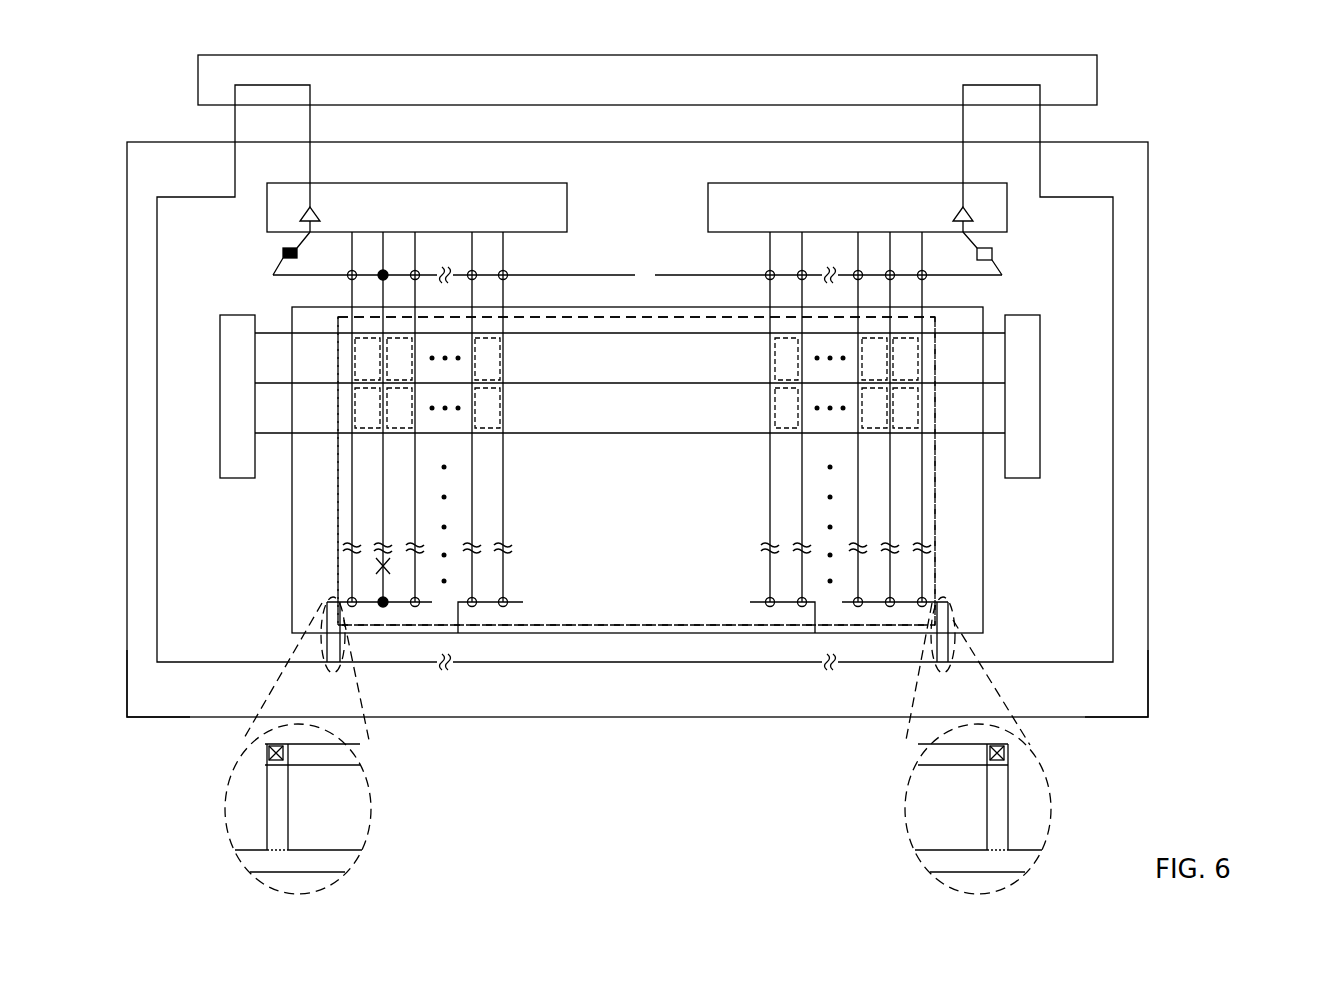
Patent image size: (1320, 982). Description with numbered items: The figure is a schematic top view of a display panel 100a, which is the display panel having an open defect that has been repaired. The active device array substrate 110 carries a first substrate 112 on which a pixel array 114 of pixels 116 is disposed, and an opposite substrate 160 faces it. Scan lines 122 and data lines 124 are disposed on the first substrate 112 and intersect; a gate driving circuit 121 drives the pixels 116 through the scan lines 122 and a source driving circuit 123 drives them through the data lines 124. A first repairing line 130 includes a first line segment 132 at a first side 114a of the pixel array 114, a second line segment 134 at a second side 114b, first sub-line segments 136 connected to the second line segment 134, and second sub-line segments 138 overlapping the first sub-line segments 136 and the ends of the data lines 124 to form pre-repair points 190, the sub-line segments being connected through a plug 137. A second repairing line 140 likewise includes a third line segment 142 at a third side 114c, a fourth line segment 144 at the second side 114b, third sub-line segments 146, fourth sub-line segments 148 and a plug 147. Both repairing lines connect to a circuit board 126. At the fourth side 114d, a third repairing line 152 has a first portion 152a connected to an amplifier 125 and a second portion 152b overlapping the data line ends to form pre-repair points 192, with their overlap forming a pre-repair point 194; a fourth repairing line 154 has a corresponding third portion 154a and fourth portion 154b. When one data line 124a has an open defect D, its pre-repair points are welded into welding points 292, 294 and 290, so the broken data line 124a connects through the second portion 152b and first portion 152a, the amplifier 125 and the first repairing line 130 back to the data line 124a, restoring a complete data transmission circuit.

The display panel 100a is at (679, 436).
The active device array substrate 110 is at (1148, 645).
The first substrate 112 is at (636, 714).
The pixel array 114 is at (636, 471).
The first side 114a is at (328, 514).
The second side 114b is at (587, 636).
The third side 114c is at (945, 514).
The fourth side 114d is at (587, 313).
The pixel 116 is at (355, 416).
The gate driving circuit 121 is at (235, 479).
The scan line 122 is at (318, 334).
The source driving circuit 123 is at (267, 212).
The data line 124 is at (637, 417).
The broken data line 124a is at (384, 520).
The amplifier 125 is at (321, 216).
The circuit board 126 is at (198, 80).
The first repairing line 130 is at (149, 733).
The first line segment 132 is at (157, 648).
The second line segment 134 is at (350, 862).
The first sub-line segment 136 is at (327, 650).
The plug 137 is at (268, 754).
The second sub-line segment 138 is at (328, 600).
The second repairing line 140 is at (1127, 734).
The third line segment 142 is at (1148, 650).
The fourth line segment 144 is at (925, 862).
The third sub-line segment 146 is at (948, 650).
The plug 147 is at (1005, 755).
The fourth sub-line segment 148 is at (952, 602).
The third repairing line 152 is at (401, 266).
The first portion 152a is at (283, 252).
The second portion 152b is at (276, 272).
The fourth repairing line 154 is at (883, 266).
The third portion 154a is at (993, 252).
The fourth portion 154b is at (1000, 273).
The opposite substrate 160 is at (985, 612).
The pre-repair point 190 is at (364, 594).
The pre-repair point 192 is at (354, 271).
The pre-repair point 194 is at (1000, 251).
The welding point 290 is at (385, 606).
The welding point 292 is at (387, 271).
The welding point 294 is at (276, 252).
The open defect D is at (390, 565).